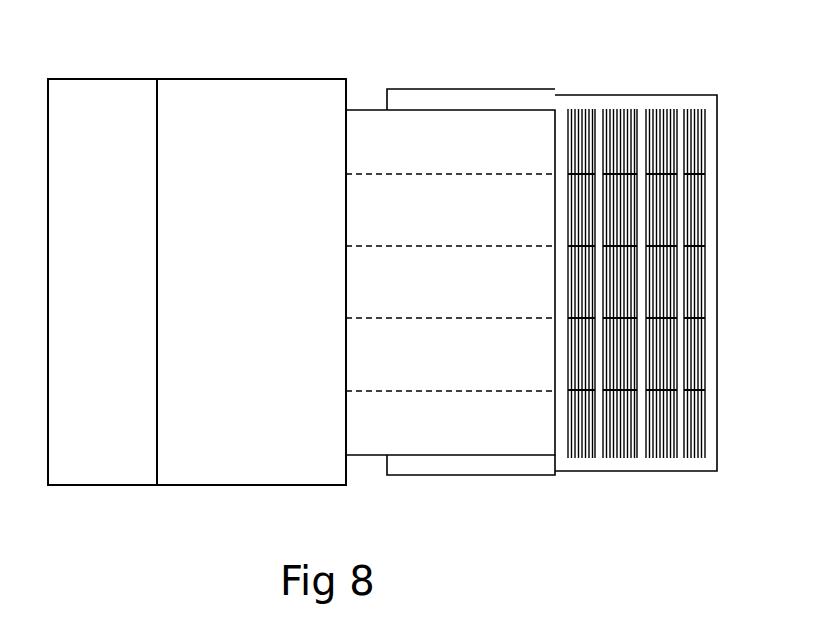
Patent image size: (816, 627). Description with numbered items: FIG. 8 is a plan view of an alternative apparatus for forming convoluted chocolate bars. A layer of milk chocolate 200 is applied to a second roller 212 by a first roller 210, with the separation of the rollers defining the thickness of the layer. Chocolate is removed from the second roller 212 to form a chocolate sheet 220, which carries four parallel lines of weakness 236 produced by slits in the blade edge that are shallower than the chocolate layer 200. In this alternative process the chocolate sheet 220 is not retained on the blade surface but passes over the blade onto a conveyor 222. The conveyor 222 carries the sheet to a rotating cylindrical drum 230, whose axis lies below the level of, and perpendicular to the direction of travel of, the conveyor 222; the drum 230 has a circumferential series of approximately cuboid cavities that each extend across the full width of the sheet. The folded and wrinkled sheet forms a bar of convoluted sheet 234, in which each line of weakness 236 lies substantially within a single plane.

The layer of milk chocolate 200 is at (272, 300).
The first roller 210 is at (98, 456).
The second roller 212 is at (220, 487).
The chocolate sheet 220 is at (390, 140).
The conveyor 222 is at (500, 462).
The rotating cylindrical drum 230 is at (650, 467).
The bar of convoluted sheet 234 is at (618, 138).
The lines of weakness 236 is at (398, 318).